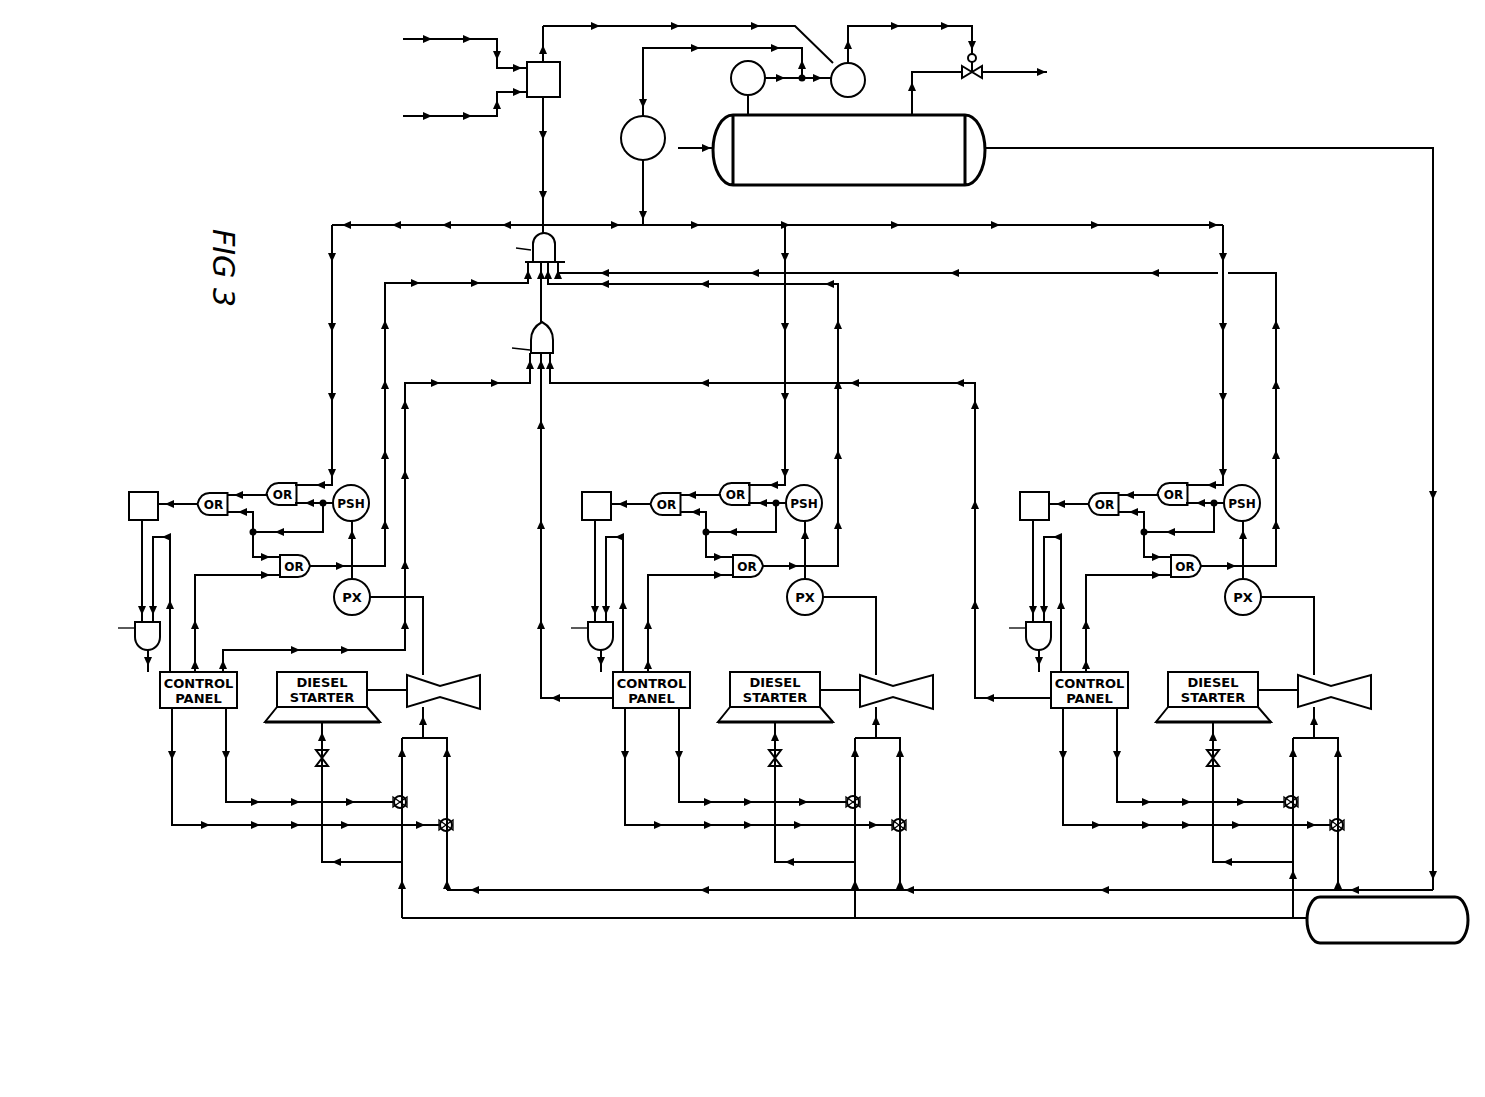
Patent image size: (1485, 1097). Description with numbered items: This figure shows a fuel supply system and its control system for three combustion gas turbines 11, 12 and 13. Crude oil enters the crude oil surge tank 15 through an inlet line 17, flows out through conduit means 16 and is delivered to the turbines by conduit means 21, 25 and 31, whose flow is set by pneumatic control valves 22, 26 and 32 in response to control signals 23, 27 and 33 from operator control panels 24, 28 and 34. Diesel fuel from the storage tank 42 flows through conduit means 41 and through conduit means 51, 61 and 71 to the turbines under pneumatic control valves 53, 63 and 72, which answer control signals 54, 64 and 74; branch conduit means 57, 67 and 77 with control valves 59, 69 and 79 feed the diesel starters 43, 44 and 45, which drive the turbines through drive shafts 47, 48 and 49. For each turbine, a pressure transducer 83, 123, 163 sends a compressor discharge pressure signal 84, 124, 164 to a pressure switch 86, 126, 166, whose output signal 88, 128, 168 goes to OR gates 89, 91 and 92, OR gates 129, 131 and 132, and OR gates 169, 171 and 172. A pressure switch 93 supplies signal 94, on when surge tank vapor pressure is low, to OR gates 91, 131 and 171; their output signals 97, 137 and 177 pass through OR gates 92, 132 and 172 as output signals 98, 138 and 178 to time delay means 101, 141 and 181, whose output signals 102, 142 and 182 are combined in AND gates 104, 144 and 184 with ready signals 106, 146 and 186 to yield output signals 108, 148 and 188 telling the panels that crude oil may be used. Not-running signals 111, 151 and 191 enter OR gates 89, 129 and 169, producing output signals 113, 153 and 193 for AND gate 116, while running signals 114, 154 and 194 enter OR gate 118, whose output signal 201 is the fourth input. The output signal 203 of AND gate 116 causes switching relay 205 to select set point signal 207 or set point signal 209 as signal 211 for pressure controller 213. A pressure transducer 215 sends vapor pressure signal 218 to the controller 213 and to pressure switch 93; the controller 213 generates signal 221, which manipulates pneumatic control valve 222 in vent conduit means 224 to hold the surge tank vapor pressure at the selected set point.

The combustion gas turbine 11 is at (482, 695).
The combustion gas turbine 12 is at (916, 674).
The combustion gas turbine 13 is at (1354, 674).
The crude oil surge tank 15 is at (986, 128).
The conduit means 16 is at (1058, 148).
The crude oil inlet line 17 is at (690, 150).
The conduit means 21 is at (447, 772).
The pneumatic control valve 22 is at (453, 825).
The control signal 23 is at (195, 825).
The control panel 24 is at (160, 702).
The conduit means 25 is at (894, 798).
The pneumatic control valve 26 is at (915, 824).
The control signal 27 is at (756, 768).
The control panel 28 is at (651, 708).
The conduit means 31 is at (1332, 798).
The pneumatic control valve 32 is at (1353, 824).
The control signal 33 is at (1176, 768).
The control panel 34 is at (1089, 706).
The conduit means 41 is at (1308, 922).
The storage tank 42 is at (1435, 892).
The diesel starter 43 is at (360, 722).
The diesel starter 44 is at (775, 716).
The diesel starter 45 is at (1213, 716).
The drive shaft 47 is at (388, 690).
The drive shaft 48 is at (840, 673).
The drive shaft 49 is at (1278, 673).
The conduit means 51 is at (402, 903).
The pneumatic control valve 53 is at (407, 803).
The control signal 54 is at (275, 802).
The conduit means 57 is at (322, 848).
The control valve 59 is at (316, 758).
The conduit means 61 is at (836, 828).
The control valve 63 is at (871, 802).
The control signal 64 is at (760, 757).
The conduit means 67 is at (794, 794).
The control valve 69 is at (756, 756).
The conduit means 71 is at (1275, 828).
The pneumatic control valve 72 is at (1309, 802).
The control signal 74 is at (1181, 757).
The conduit means 77 is at (1235, 794).
The control valve 79 is at (1194, 756).
The pressure transducer 83 is at (352, 615).
The signal 84 is at (352, 550).
The pressure switch 86 is at (351, 485).
The output signal 88 is at (253, 543).
The OR gate 89 is at (295, 578).
The OR gate 91 is at (285, 483).
The OR gate 92 is at (213, 493).
The pressure switch 93 is at (621, 138).
The signal 94 is at (643, 196).
The output signal 97 is at (260, 494).
The output signal 98 is at (193, 502).
The time delay means 101 is at (143, 492).
The output signal 102 is at (142, 553).
The AND gate 104 is at (135, 645).
The signal 106 is at (170, 555).
The output signal 108 is at (148, 668).
The signal 111 is at (195, 617).
The output signal 113 is at (448, 283).
The signal 114 is at (455, 383).
The AND gate 116 is at (558, 250).
The OR gate 118 is at (555, 350).
The pressure transducer 123 is at (831, 627).
The signal 124 is at (782, 550).
The pressure switch 126 is at (804, 484).
The output signal 128 is at (722, 530).
The OR gate 129 is at (743, 582).
The OR gate 131 is at (740, 477).
The OR gate 132 is at (666, 487).
The output signal 137 is at (703, 479).
The output signal 138 is at (632, 488).
The time delay means 141 is at (593, 487).
The output signal 142 is at (572, 571).
The AND gate 144 is at (575, 639).
The signal 146 is at (636, 602).
The output signal 148 is at (580, 666).
The signal 151 is at (688, 621).
The output signal 153 is at (838, 511).
The signal 154 is at (575, 699).
The pressure transducer 163 is at (1269, 627).
The signal 164 is at (1220, 550).
The pressure switch 166 is at (1242, 484).
The output signal 168 is at (1160, 530).
The OR gate 169 is at (1181, 582).
The OR gate 171 is at (1178, 477).
The OR gate 172 is at (1104, 487).
The output signal 177 is at (1141, 479).
The output signal 178 is at (1070, 488).
The time delay means 181 is at (1031, 487).
The output signal 182 is at (1010, 571).
The AND gate 184 is at (1013, 639).
The signal 186 is at (1074, 602).
The output signal 188 is at (1015, 660).
The signal 191 is at (1126, 621).
The output signal 193 is at (1277, 333).
The signal 194 is at (1013, 698).
The output signal 201 is at (541, 306).
The output signal 203 is at (543, 168).
The switching relay 205 is at (562, 80).
The set point signal 207 is at (450, 41).
The set point signal 209 is at (450, 118).
The signal 211 is at (613, 28).
The pressure controller 213 is at (866, 92).
The pressure transducer 215 is at (738, 78).
The signal 218 is at (780, 87).
The signal 221 is at (898, 28).
The pneumatic control valve 222 is at (972, 80).
The conduit means 224 is at (1022, 72).